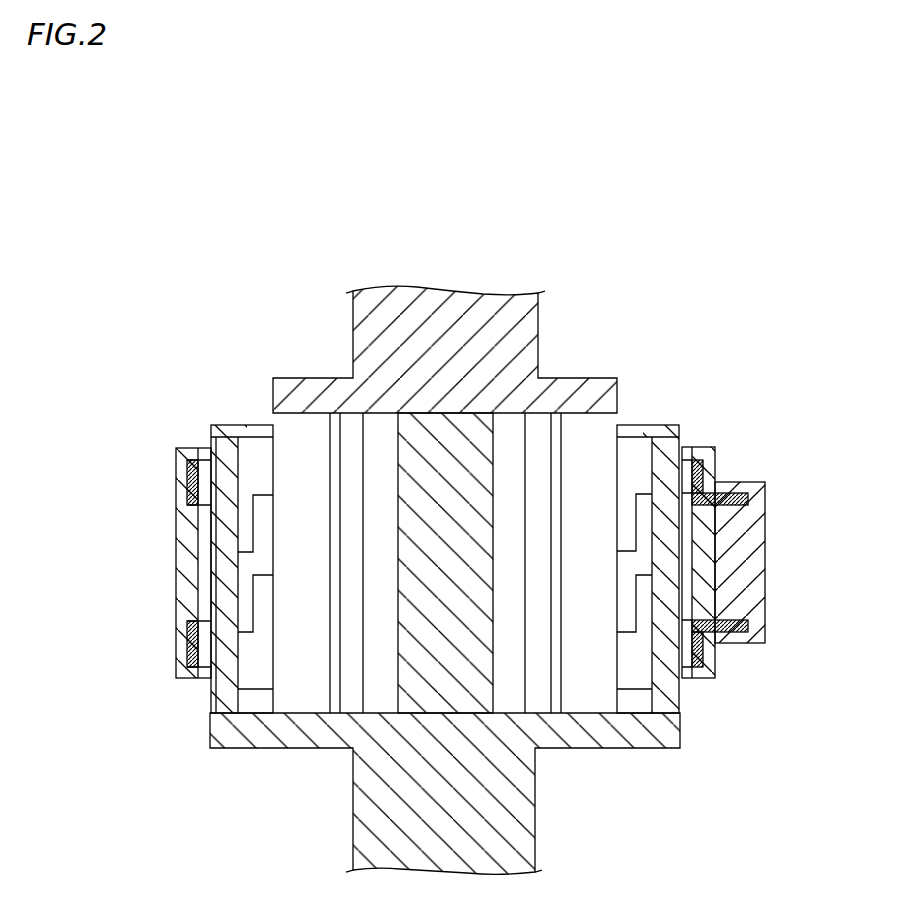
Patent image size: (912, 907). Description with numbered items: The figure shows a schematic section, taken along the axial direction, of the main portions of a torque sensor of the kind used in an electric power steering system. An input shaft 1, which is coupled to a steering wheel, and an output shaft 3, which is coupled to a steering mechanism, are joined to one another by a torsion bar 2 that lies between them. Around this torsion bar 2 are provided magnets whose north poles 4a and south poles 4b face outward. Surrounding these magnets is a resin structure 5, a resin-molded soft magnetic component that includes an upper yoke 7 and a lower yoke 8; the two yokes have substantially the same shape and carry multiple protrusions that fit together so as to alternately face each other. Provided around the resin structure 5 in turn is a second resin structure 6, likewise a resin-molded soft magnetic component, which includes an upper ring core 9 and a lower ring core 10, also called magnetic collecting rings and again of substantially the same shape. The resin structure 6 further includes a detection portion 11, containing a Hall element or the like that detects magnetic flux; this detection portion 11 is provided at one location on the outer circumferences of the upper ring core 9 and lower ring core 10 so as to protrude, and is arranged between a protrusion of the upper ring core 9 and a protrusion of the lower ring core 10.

The input shaft 1 is at (521, 358).
The torsion bar 2 is at (423, 470).
The output shaft 3 is at (505, 825).
The north poles 4a is at (603, 515).
The south poles 4b is at (297, 470).
The resin structure 5 is at (218, 575).
The resin structure 6 is at (712, 542).
The upper yoke 7 is at (228, 462).
The lower yoke 8 is at (188, 645).
The upper ring core 9 is at (705, 482).
The lower ring core 10 is at (700, 650).
The detection portion 11 is at (740, 577).